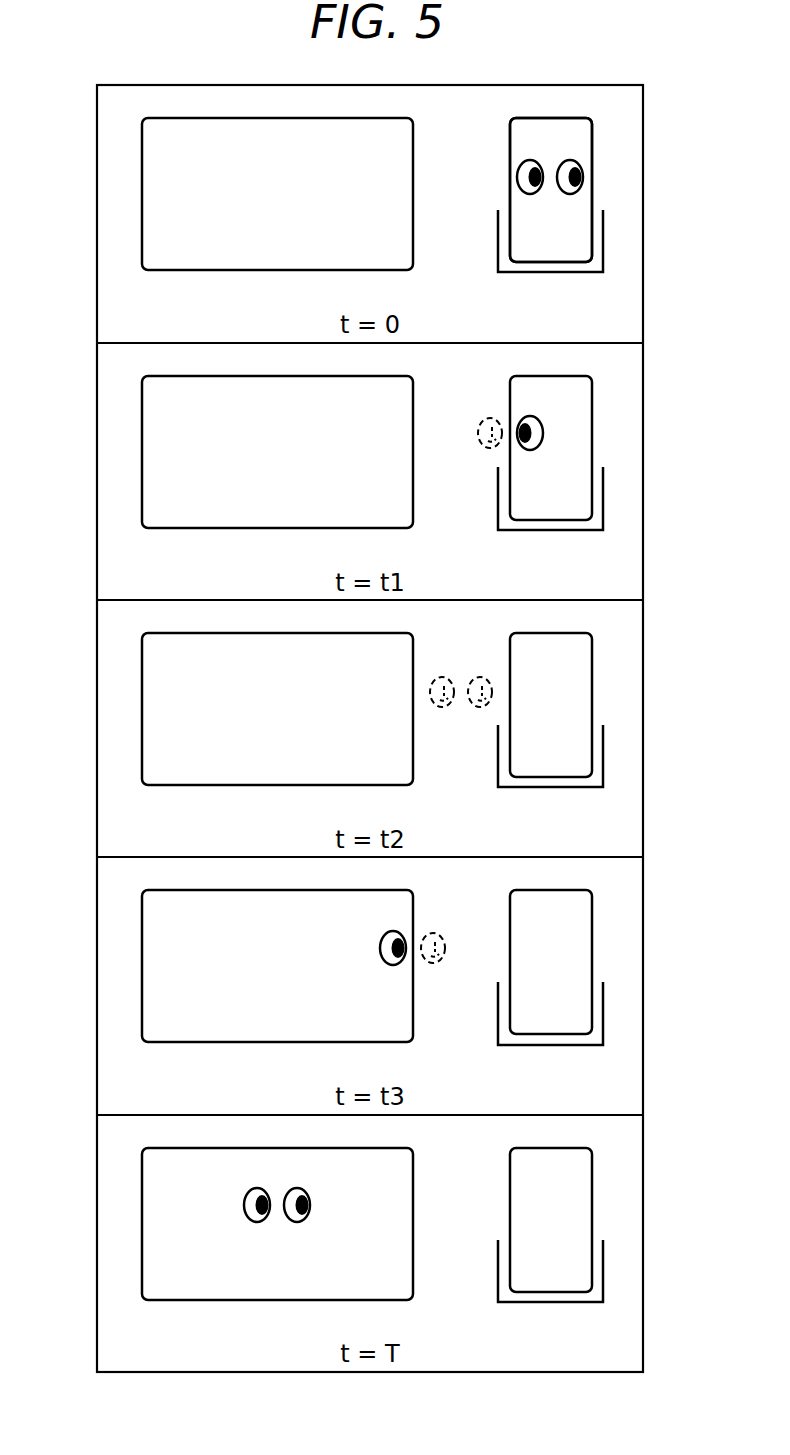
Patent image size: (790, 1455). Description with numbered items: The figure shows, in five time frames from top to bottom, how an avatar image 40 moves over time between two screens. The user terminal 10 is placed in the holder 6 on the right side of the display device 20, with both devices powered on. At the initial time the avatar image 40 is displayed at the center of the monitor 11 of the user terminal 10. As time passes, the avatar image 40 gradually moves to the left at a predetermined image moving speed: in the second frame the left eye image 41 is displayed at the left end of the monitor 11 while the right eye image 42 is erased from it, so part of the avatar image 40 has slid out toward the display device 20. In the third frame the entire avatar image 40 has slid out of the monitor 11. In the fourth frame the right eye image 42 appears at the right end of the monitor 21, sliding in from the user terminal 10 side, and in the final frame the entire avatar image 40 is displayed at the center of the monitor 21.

The display device 20 is at (349, 114).
The monitor 21 is at (157, 160).
The user terminal 10 is at (598, 151).
The monitor 11 is at (551, 117).
The holder 6 is at (605, 242).
The avatar image 40 is at (549, 199).
The left eye image 41 is at (528, 415).
The right eye image 42 is at (484, 420).